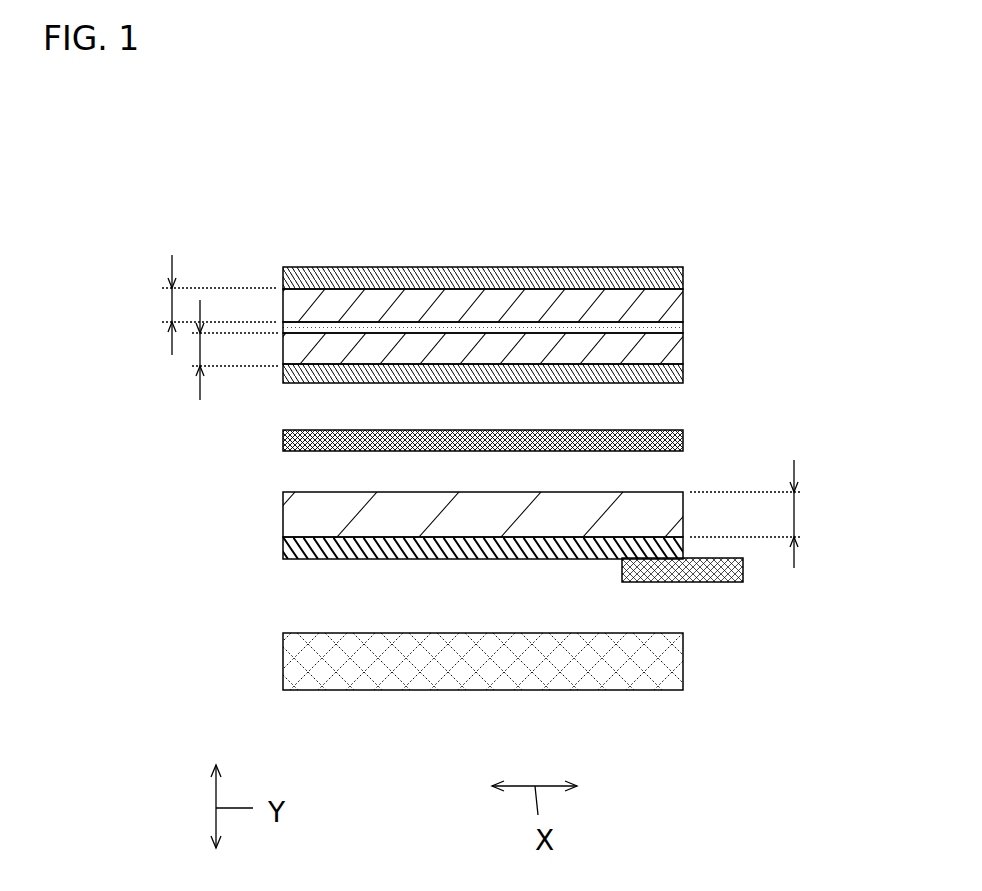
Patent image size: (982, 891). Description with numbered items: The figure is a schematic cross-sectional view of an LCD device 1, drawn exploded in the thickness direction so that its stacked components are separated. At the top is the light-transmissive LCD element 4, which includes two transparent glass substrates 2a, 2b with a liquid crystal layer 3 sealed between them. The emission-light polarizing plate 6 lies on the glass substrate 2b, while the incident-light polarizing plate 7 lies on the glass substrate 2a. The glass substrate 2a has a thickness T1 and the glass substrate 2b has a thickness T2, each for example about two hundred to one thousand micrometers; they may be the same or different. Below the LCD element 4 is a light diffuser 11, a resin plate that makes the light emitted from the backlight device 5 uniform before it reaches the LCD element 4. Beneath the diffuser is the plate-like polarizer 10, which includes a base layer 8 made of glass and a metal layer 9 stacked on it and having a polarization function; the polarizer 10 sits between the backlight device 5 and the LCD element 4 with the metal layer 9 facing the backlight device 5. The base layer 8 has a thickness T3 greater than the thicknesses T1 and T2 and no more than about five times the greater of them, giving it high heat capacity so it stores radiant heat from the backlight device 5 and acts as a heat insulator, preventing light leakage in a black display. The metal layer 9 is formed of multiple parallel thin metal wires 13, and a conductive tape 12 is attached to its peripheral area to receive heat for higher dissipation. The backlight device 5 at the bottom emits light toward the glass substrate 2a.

The LCD device 1 is at (667, 183).
The glass substrate 2a is at (655, 349).
The glass substrate 2b is at (657, 305).
The liquid crystal layer 3 is at (685, 337).
The LCD element 4 is at (564, 308).
The backlight device 5 is at (610, 670).
The emission-light polarizing plate 6 is at (535, 282).
The incident-light polarizing plate 7 is at (593, 378).
The base layer 8 is at (297, 518).
The metal layer 9 is at (283, 553).
The thin metal wires 13 is at (436, 561).
The polarizer 10 is at (403, 538).
The light diffuser 11 is at (685, 439).
The conductive tape 12 is at (710, 578).
The thickness of glass substrate T1 is at (197, 350).
The thickness of glass substrate T2 is at (168, 310).
The thickness of base layer T3 is at (797, 523).